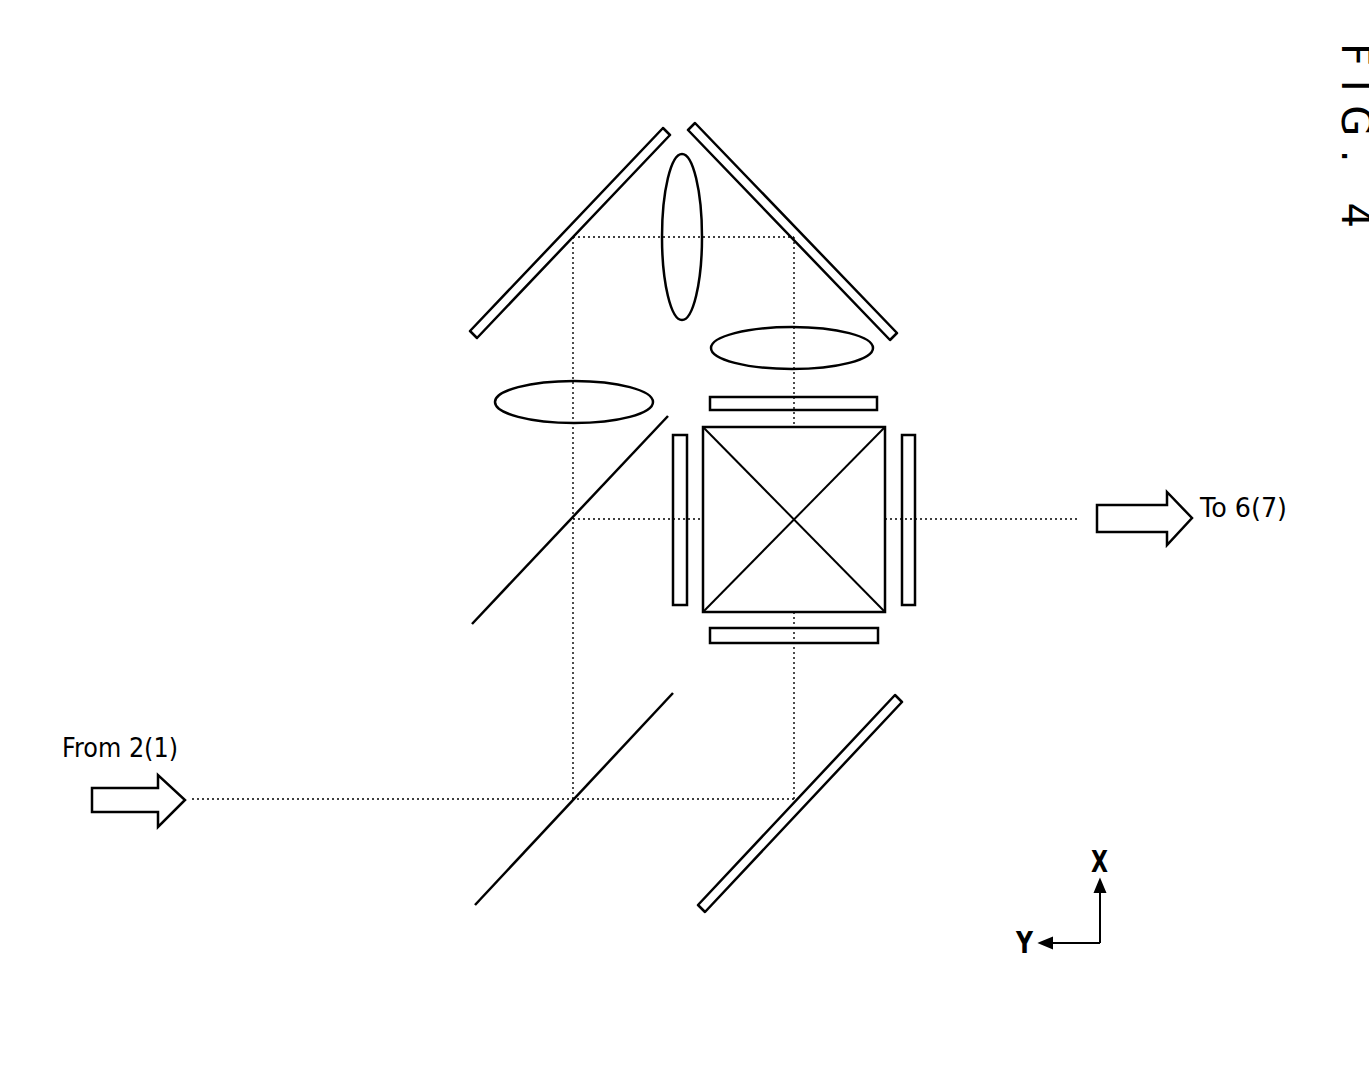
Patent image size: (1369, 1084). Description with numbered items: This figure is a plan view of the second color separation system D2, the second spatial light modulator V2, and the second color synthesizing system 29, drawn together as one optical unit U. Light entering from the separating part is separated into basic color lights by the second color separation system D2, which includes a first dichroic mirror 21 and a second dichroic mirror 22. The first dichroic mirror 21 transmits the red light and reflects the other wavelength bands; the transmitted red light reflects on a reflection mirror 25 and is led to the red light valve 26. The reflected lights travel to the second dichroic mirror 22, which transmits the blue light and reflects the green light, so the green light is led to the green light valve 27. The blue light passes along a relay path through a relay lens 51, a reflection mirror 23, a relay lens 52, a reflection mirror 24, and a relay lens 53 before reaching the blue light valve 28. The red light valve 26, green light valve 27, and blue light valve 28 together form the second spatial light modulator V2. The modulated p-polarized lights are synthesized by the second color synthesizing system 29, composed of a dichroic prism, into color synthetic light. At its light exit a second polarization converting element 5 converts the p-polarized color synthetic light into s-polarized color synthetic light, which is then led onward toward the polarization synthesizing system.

The second polarization converting element 5 is at (917, 573).
The first dichroic mirror 21 is at (495, 883).
The second dichroic mirror 22 is at (493, 600).
The reflection mirror 23 is at (537, 253).
The reflection mirror 24 is at (893, 306).
The reflection mirror 25 is at (735, 881).
The red light valve 26 is at (880, 635).
The green light valve 27 is at (673, 575).
The blue light valve 28 is at (880, 403).
The second color synthesizing system 29 is at (890, 431).
The relay lens 51 is at (495, 401).
The relay lens 52 is at (700, 281).
The relay lens 53 is at (712, 348).
The optical unit U is at (358, 218).
The second spatial light modulator V2 is at (918, 346).
The second color separation system D2 is at (402, 622).